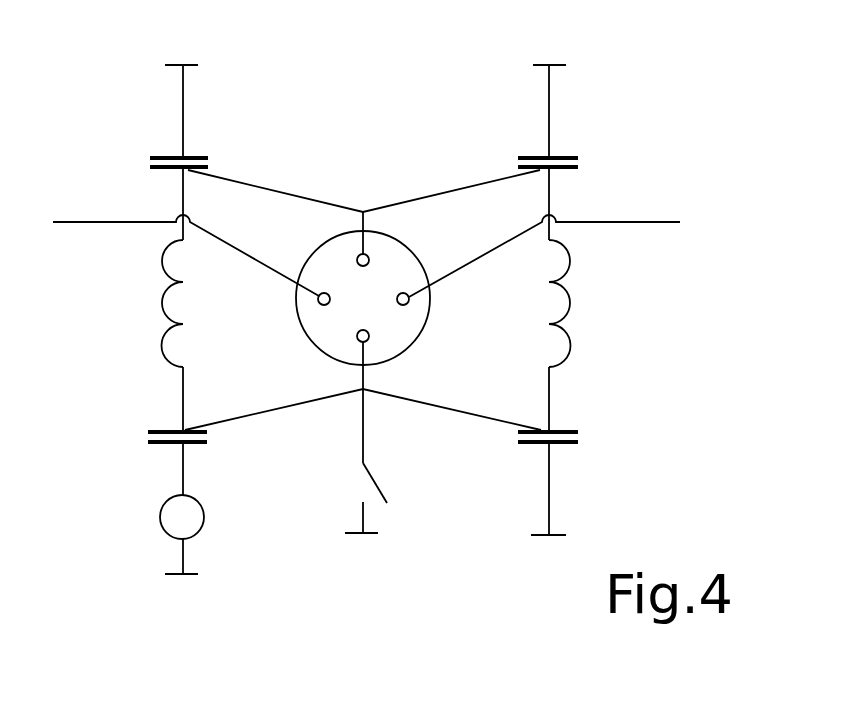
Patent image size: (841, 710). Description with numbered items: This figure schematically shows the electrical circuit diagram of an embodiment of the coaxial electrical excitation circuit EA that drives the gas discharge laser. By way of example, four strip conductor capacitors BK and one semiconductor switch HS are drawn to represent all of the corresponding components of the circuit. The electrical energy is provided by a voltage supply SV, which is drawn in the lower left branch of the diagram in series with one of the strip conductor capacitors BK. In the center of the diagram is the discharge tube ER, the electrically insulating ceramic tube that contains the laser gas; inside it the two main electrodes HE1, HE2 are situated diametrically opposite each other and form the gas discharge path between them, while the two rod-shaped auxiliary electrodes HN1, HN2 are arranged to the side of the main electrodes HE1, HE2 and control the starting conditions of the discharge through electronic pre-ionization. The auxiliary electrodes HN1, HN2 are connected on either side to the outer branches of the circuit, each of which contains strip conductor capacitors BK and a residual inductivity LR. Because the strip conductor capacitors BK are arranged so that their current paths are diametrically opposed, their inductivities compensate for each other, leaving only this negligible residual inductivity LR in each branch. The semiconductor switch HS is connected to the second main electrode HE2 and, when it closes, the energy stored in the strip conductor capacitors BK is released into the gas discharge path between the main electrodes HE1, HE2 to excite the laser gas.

The electrical excitation circuit EA is at (365, 78).
The strip conductor capacitor BK is at (175, 170).
The first auxiliary electrode HN1 is at (118, 222).
The second auxiliary electrode HN2 is at (617, 222).
The residual inductivity LR is at (163, 318).
The discharge tube ER is at (430, 252).
The first main electrode HE1 is at (361, 250).
The second main electrode HE2 is at (366, 377).
The semiconductor switch HS is at (392, 460).
The voltage supply SV is at (182, 517).